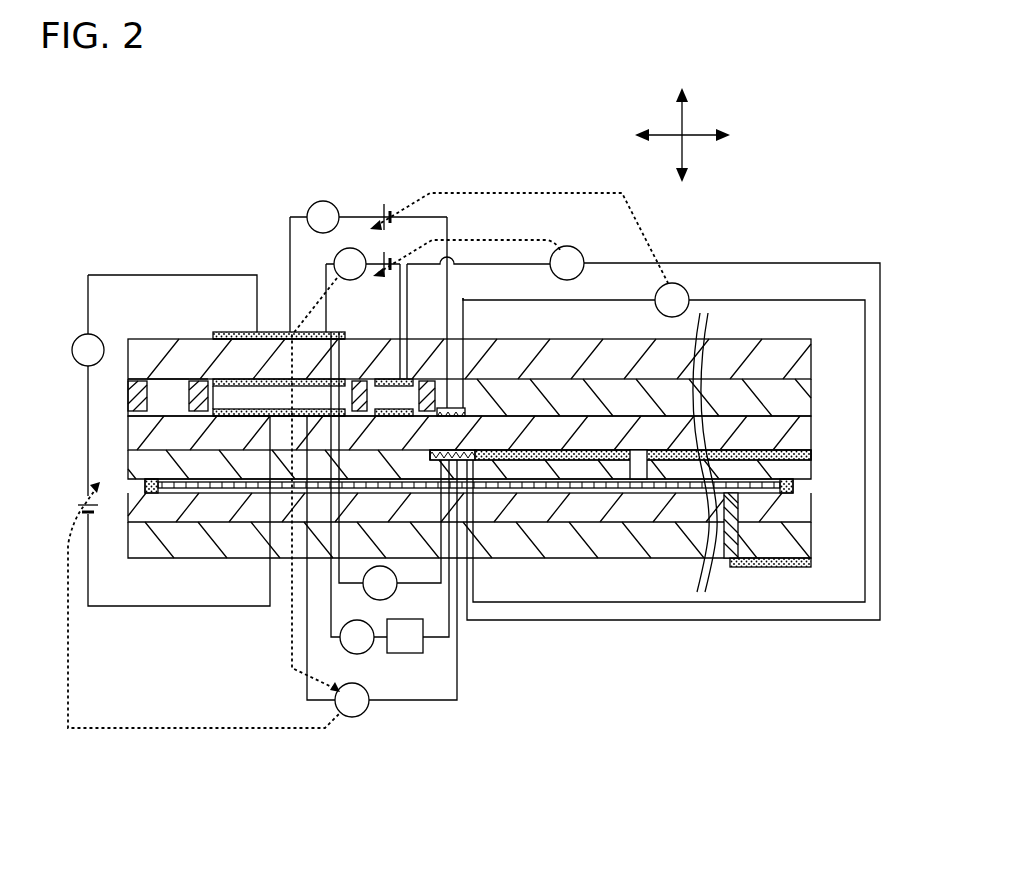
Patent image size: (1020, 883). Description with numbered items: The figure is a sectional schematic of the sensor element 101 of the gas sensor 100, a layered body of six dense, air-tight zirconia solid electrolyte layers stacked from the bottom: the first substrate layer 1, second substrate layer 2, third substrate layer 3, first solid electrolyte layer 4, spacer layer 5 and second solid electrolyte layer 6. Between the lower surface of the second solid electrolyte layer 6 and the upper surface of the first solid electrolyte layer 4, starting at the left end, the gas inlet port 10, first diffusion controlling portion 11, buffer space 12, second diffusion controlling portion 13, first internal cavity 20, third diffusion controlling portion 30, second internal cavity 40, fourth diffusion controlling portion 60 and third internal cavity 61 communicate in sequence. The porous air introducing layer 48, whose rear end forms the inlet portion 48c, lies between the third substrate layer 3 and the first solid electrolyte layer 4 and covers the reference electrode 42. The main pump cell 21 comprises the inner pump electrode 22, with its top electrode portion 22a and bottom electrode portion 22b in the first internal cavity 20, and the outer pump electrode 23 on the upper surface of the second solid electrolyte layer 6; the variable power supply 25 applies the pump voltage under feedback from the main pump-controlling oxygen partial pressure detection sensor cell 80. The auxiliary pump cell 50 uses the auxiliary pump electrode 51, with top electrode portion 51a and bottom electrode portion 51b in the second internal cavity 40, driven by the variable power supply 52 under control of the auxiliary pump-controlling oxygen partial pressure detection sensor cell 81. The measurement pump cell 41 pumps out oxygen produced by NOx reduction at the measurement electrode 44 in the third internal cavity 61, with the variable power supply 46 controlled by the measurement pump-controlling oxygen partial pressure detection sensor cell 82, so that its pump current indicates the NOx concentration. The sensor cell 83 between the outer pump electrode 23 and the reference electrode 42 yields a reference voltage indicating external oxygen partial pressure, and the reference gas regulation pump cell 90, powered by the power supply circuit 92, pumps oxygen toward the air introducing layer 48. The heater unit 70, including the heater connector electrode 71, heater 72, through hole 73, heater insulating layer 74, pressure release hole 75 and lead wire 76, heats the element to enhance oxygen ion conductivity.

The first substrate layer 1 is at (812, 540).
The second substrate layer 2 is at (812, 507).
The third substrate layer 3 is at (127, 463).
The first solid electrolyte layer 4 is at (127, 431).
The spacer layer 5 is at (812, 378).
The second solid electrolyte layer 6 is at (812, 356).
The gas inlet port 10 is at (127, 397).
The first diffusion controlling portion 11 is at (138, 380).
The buffer space 12 is at (180, 385).
The second diffusion controlling portion 13 is at (201, 381).
The first internal cavity 20 is at (316, 405).
The main pump cell 21 is at (160, 272).
The inner pump electrode 22 is at (272, 378).
The top electrode portion 22a is at (300, 375).
The bottom electrode portion 22b is at (262, 409).
The outer pump electrode 23 is at (226, 332).
The variable power supply 25 is at (76, 504).
The third diffusion controlling portion 30 is at (353, 380).
The second internal cavity 40 is at (386, 380).
The measurement pump cell 41 is at (309, 201).
The reference electrode 42 is at (470, 455).
The measurement electrode 44 is at (440, 420).
The variable power supply 46 is at (388, 205).
The air introducing layer 48 is at (808, 447).
The inlet portion 48c is at (812, 455).
The auxiliary pump cell 50 is at (326, 258).
The auxiliary pump electrode 51 is at (390, 377).
The top electrode portion 51a is at (411, 377).
The bottom electrode portion 51b is at (394, 416).
The variable power supply 52 is at (387, 278).
The fourth diffusion controlling portion 60 is at (442, 405).
The third internal cavity 61 is at (468, 402).
The heater unit 70 is at (497, 533).
The heater connector electrode 71 is at (812, 563).
The heater 72 is at (178, 495).
The through hole 73 is at (736, 522).
The heater insulating layer 74 is at (150, 495).
The pressure release hole 75 is at (644, 490).
The lead wire 76 is at (532, 495).
The main pump-controlling oxygen partial pressure detection sensor cell 80 is at (385, 711).
The auxiliary pump-controlling oxygen partial pressure detection sensor cell 81 is at (728, 260).
The measurement pump-controlling oxygen partial pressure detection sensor cell 82 is at (728, 296).
The sensor cell 83 is at (404, 593).
The reference gas regulation pump cell 90 is at (393, 507).
The power supply circuit 92 is at (400, 654).
The gas sensor 100 is at (797, 140).
The sensor element 101 is at (142, 318).